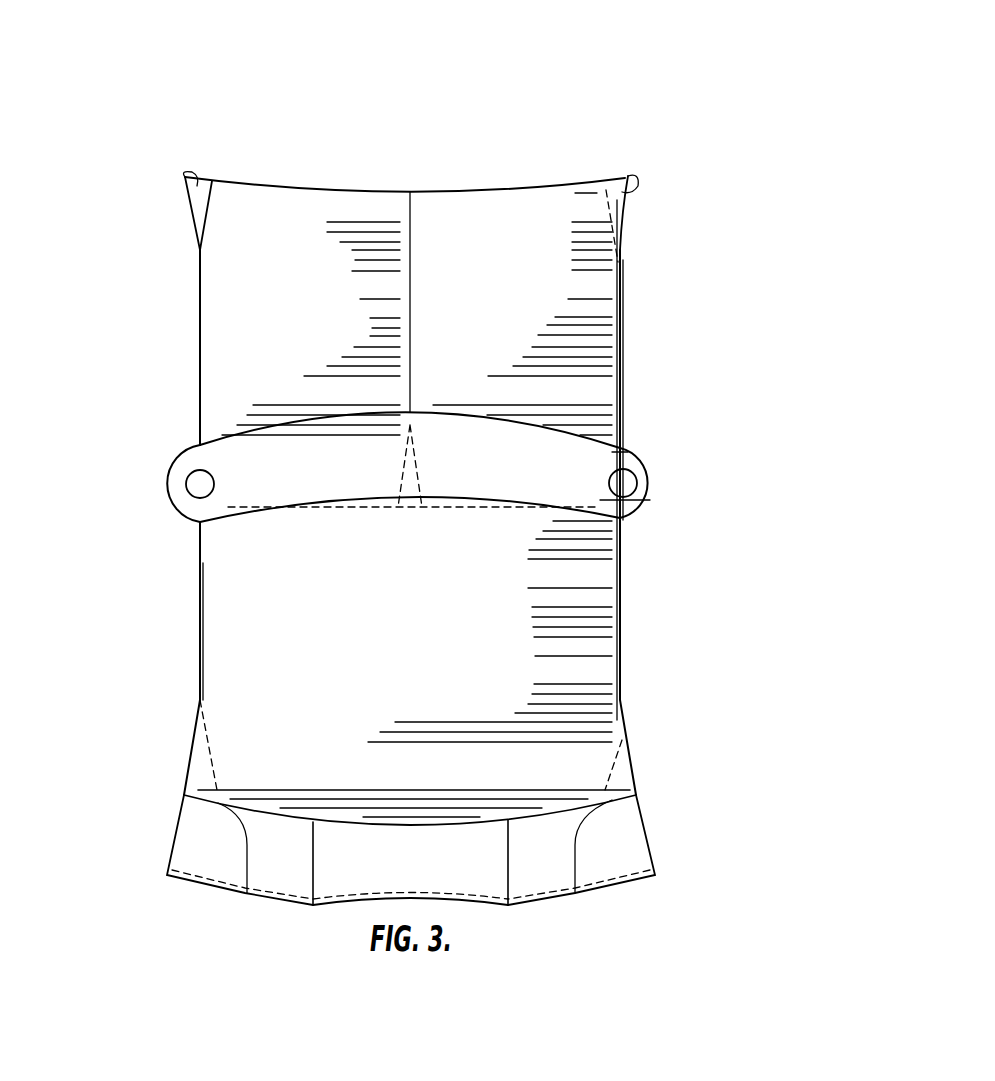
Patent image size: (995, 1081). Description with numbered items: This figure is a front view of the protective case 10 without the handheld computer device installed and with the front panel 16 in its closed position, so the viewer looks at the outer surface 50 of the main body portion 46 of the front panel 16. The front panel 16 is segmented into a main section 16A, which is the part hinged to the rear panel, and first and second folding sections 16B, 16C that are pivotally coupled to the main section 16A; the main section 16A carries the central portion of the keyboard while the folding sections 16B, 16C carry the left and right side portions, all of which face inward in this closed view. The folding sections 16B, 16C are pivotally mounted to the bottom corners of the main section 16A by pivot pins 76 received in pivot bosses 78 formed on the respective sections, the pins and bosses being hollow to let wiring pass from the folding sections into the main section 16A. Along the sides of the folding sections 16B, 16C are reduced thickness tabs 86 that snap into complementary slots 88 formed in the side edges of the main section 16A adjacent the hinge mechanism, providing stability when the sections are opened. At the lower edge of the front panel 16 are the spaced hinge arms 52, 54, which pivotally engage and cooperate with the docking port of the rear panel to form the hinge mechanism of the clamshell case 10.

The protective case 10 is at (598, 112).
The front panel 16 is at (284, 632).
The main section 16A is at (240, 675).
The first folding section 16B is at (492, 218).
The second folding section 16C is at (283, 230).
The main body portion 46 is at (594, 627).
The outer surface 50 is at (236, 562).
The hinge arm 52 is at (285, 862).
The hinge arm 54 is at (540, 862).
The pivot pin 76 is at (197, 480).
The pivot boss 78 is at (162, 500).
The reduced thickness tab 86 is at (194, 182).
The slot 88 is at (195, 765).